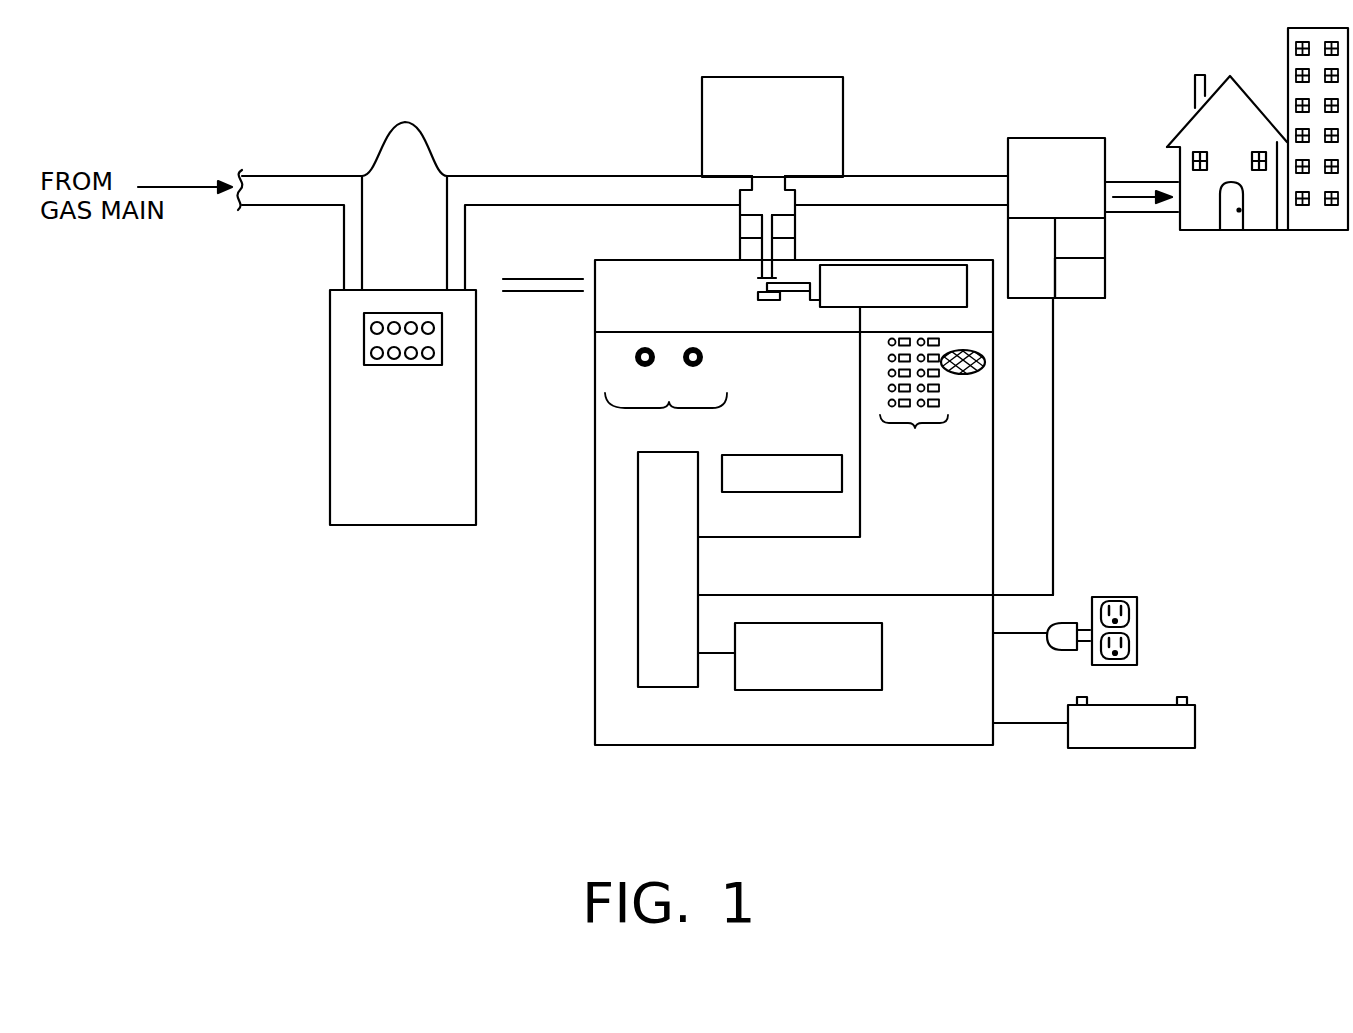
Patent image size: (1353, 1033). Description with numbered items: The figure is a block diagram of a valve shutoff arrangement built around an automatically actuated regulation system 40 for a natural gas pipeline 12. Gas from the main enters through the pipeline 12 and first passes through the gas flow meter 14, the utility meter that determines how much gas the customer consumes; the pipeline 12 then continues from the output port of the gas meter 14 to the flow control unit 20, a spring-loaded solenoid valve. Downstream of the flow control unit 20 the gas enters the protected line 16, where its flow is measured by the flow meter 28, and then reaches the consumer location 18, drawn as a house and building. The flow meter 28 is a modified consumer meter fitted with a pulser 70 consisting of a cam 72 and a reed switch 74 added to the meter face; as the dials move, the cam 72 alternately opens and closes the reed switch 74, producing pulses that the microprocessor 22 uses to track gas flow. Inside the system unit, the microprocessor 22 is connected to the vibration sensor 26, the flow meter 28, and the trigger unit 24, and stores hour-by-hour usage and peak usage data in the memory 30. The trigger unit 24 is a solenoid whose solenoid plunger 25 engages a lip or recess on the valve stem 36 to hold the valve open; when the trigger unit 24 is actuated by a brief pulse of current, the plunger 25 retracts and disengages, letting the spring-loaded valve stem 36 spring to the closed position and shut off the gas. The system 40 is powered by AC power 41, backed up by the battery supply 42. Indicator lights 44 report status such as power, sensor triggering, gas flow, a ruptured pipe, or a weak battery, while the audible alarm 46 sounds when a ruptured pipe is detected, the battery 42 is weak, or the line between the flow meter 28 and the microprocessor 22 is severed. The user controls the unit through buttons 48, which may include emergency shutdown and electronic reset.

The natural gas pipeline 12 is at (404, 129).
The gas flow meter 14 is at (330, 480).
The protected line 16 is at (1135, 180).
The consumer location 18 is at (1185, 125).
The flow control unit 20 is at (767, 77).
The microprocessor 22 is at (698, 579).
The trigger unit 24 is at (890, 262).
The solenoid plunger 25 is at (787, 298).
The vibration sensor 26 is at (882, 658).
The flow meter 28 is at (1033, 138).
The memory 30 is at (757, 455).
The valve stem 36 is at (797, 252).
The automatically actuated regulation system 40 is at (543, 266).
The AC power 41 is at (1137, 613).
The battery supply 42 is at (1195, 725).
The indicator lights 44 is at (914, 401).
The audible alarm 46 is at (968, 375).
The buttons 48 is at (666, 397).
The pulser 70 is at (1077, 300).
The cam 72 is at (1085, 242).
The reed switch 74 is at (1090, 284).